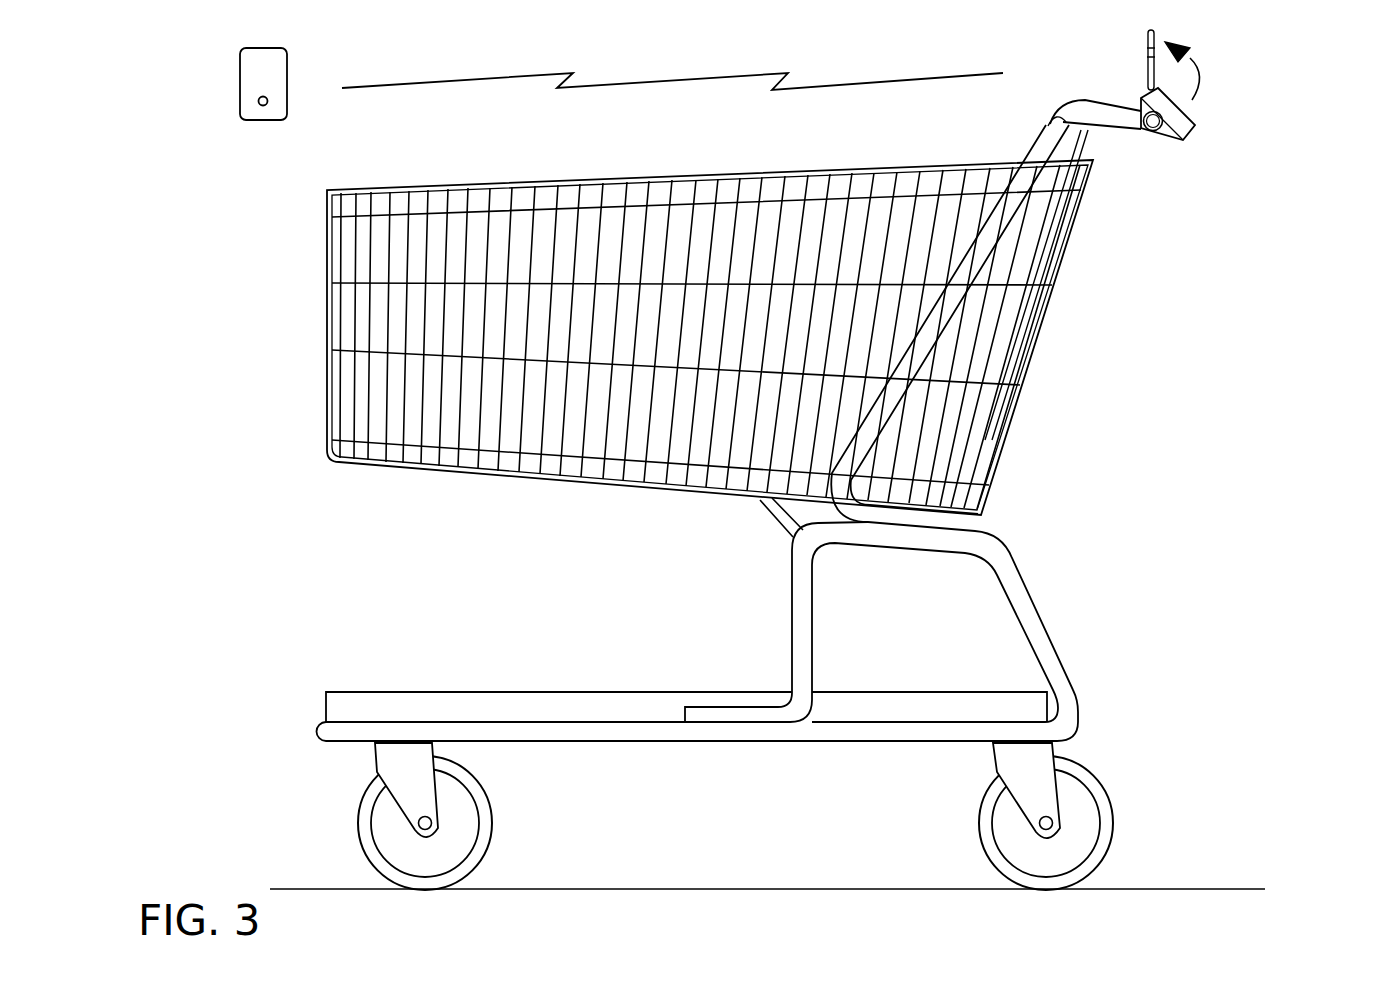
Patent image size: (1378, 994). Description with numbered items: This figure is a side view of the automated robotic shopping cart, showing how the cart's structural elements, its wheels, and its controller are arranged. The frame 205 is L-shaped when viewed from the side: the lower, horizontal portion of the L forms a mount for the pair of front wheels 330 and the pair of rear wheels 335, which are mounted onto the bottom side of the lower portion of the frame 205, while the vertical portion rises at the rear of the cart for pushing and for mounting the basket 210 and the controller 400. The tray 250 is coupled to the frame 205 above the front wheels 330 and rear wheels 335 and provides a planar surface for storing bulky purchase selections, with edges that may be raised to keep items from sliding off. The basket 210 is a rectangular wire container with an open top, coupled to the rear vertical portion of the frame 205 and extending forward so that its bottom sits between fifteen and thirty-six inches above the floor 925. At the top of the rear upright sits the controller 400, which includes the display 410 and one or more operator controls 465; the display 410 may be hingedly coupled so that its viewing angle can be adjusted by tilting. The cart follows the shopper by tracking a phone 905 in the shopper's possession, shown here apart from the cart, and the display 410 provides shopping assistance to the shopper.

The frame 205 is at (1017, 578).
The basket 210 is at (327, 423).
The tray 250 is at (400, 692).
The pair of front wheels 330 is at (458, 870).
The pair of rear wheels 335 is at (1032, 892).
The controller 400 is at (1202, 141).
The display 410 is at (1146, 54).
The operator controls 465 is at (1197, 127).
The phone 905 is at (252, 62).
The floor 925 is at (1187, 888).